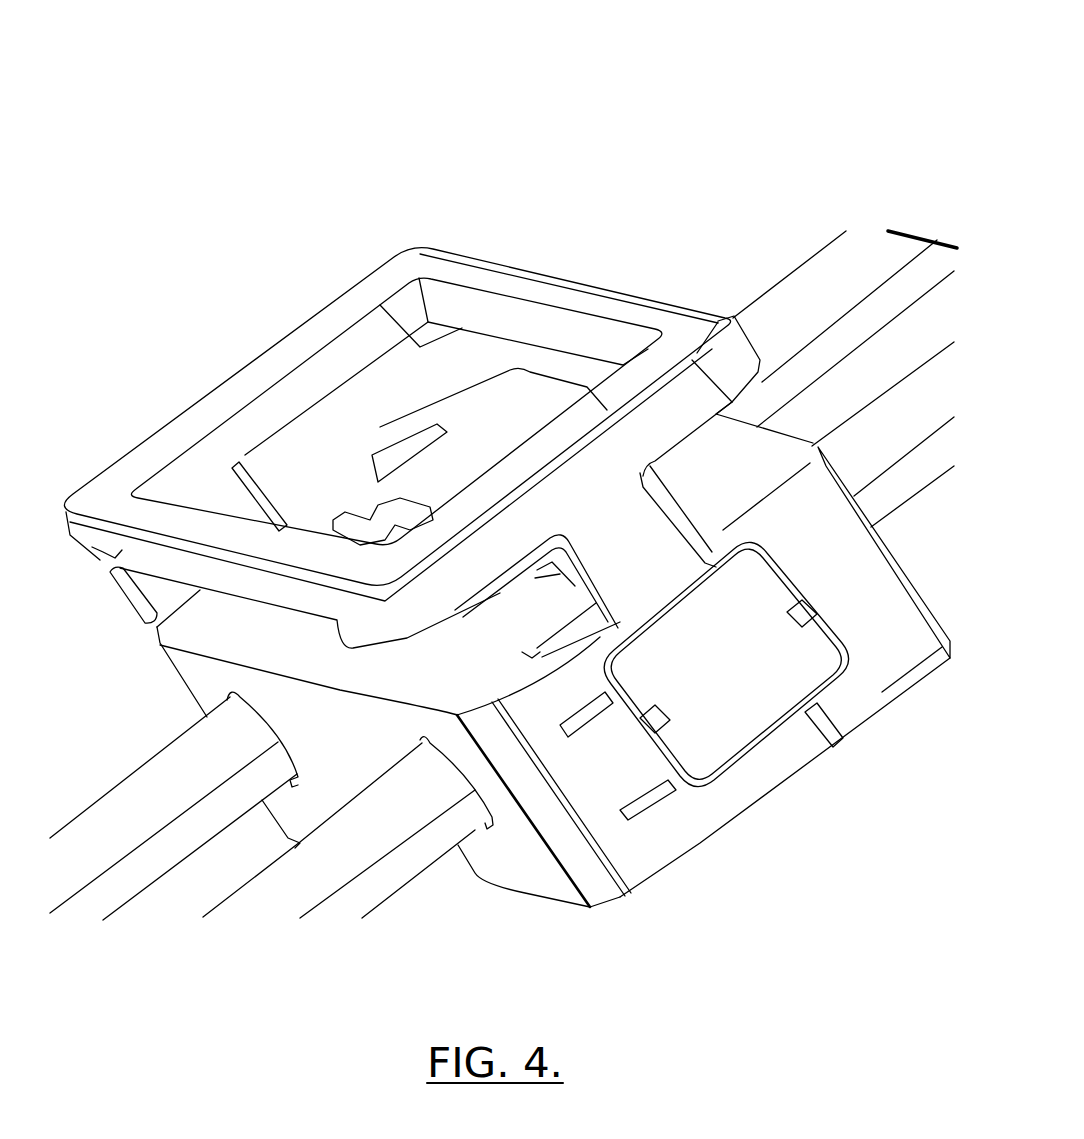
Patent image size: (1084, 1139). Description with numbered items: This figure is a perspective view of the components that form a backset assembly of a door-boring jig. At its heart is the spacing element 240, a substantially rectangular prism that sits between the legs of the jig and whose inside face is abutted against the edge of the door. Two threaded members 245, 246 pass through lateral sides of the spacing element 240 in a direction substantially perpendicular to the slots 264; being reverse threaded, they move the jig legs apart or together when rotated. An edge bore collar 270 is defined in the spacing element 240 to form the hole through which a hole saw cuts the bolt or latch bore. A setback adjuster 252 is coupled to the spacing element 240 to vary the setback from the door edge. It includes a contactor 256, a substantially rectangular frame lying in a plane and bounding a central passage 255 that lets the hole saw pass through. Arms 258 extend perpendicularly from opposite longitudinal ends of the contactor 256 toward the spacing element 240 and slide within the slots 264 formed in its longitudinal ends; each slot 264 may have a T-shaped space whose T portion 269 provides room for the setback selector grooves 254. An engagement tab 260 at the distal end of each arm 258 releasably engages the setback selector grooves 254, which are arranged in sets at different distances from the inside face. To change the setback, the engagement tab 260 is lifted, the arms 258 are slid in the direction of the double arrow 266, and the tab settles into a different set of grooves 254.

The spacing element 240 is at (883, 648).
The threaded member 245 is at (143, 785).
The threaded member 246 is at (320, 873).
The setback adjuster 252 is at (377, 225).
The setback selector grooves 254 is at (572, 728).
The passage 255 is at (400, 378).
The contactor 256 is at (622, 310).
The arms 258 is at (658, 548).
The engagement tab 260 is at (722, 678).
The slots 264 is at (740, 790).
The double arrow 266 is at (132, 597).
The T portion 269 is at (537, 652).
The edge bore collar 270 is at (350, 638).